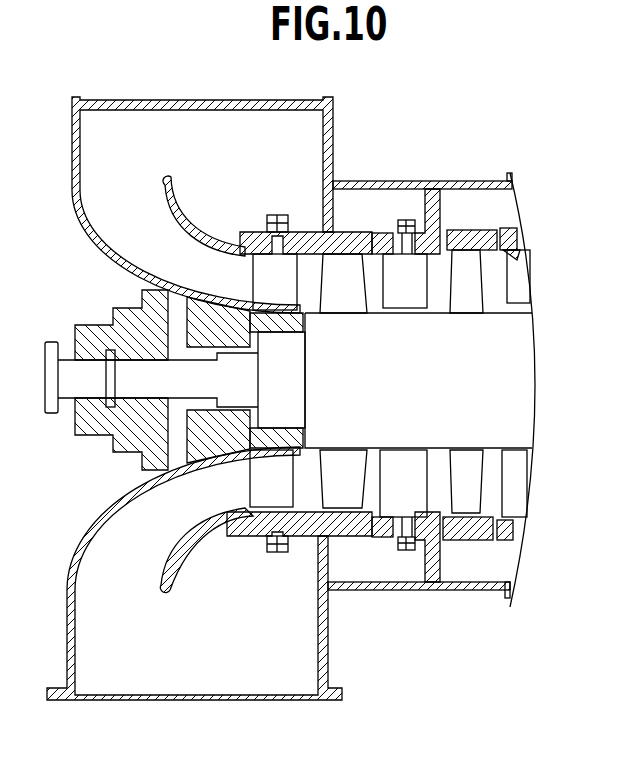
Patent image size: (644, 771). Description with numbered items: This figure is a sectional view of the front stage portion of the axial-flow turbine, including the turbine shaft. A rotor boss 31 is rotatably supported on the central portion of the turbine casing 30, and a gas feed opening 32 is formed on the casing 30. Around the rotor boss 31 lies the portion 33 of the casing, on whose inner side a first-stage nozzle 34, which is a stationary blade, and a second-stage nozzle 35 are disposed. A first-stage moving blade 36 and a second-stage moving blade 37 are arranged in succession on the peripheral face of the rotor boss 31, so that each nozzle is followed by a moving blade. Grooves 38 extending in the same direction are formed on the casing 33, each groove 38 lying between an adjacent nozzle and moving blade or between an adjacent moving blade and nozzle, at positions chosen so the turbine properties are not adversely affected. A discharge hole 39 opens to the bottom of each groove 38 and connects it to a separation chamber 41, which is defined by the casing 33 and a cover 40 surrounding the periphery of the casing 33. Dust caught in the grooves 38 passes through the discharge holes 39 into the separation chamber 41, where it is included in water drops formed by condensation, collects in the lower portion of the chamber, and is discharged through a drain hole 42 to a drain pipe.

The turbine casing 30 is at (86, 519).
The rotor boss 31 is at (518, 381).
The gas feed opening 32 is at (173, 660).
The portion of the casing surrounding the rotor boss 33 is at (508, 234).
The first-stage nozzle 34 is at (250, 484).
The second-stage nozzle 35 is at (410, 460).
The first-stage moving blade 36 is at (343, 462).
The second-stage moving blade 37 is at (465, 457).
The groove 38 is at (384, 250).
The discharge hole 39 is at (378, 262).
The cover 40 is at (470, 187).
The separation chamber 41 is at (367, 197).
The drain hole 42 is at (493, 590).